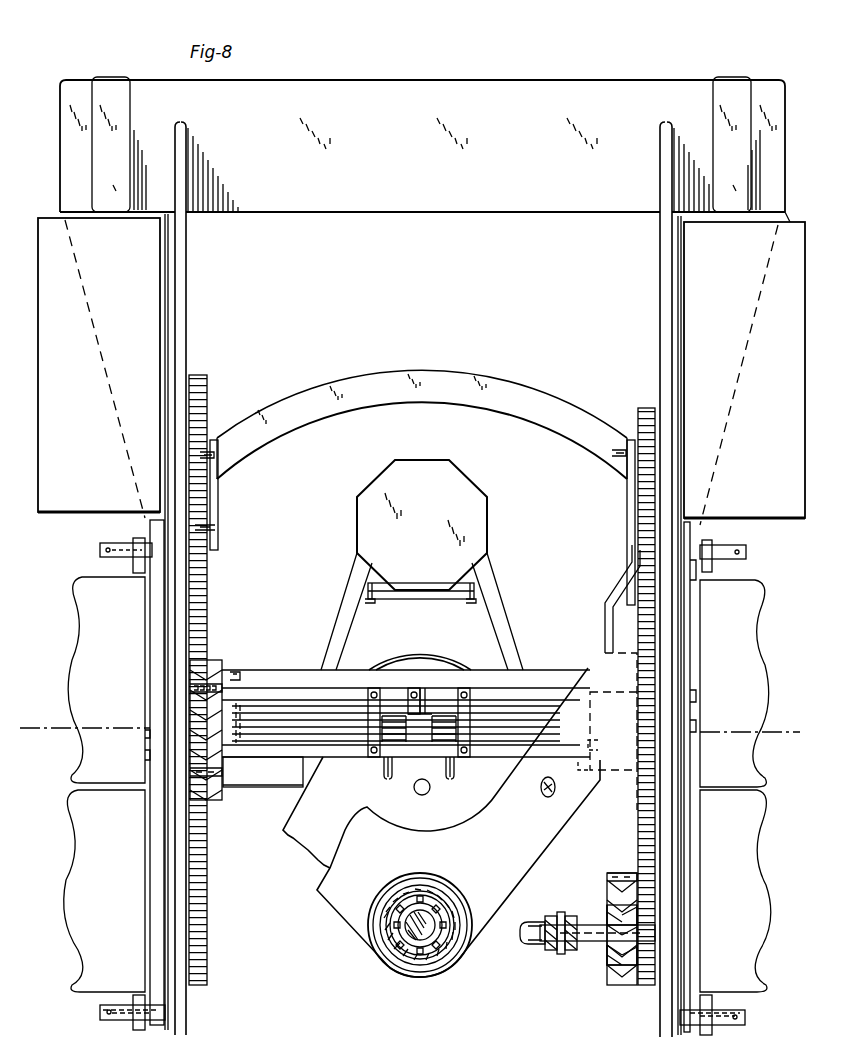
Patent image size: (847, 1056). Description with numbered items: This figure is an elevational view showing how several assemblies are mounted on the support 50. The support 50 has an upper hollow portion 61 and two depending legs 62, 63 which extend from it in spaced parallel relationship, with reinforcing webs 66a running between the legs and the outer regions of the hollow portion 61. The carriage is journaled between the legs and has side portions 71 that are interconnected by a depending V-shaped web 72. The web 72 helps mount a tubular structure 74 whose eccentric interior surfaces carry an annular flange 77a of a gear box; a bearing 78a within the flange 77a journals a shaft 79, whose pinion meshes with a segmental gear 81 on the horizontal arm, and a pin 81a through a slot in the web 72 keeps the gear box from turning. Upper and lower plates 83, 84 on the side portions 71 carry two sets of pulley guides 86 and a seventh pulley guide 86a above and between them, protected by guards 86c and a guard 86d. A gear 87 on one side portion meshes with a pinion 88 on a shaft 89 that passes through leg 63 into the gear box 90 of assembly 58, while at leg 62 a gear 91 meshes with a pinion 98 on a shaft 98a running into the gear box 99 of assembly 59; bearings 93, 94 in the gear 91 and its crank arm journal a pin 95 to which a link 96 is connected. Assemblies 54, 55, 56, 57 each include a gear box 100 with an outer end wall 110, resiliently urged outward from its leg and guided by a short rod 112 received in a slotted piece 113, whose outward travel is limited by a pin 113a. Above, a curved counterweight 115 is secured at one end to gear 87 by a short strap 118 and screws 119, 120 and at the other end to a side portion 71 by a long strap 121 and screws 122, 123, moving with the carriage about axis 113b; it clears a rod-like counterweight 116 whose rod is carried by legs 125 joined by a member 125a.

The support 50 is at (586, 82).
The upper hollow portion 61 is at (503, 94).
The assembly 59 is at (788, 214).
The leg 63 is at (186, 300).
The leg 62 is at (660, 262).
The reinforcing webs 66a is at (105, 372).
The gear box 90 is at (99, 365).
The gear box 99 is at (744, 370).
The assembly 58 is at (68, 516).
The slotted piece 113 is at (138, 538).
The short rod 112 is at (100, 552).
The pin 113a is at (106, 1011).
The axis 113b is at (416, 741).
The gear box 100 is at (417, 784).
The outer end wall 110 is at (101, 827).
The assembly 57 is at (70, 668).
The assembly 56 is at (70, 951).
The assembly 54 is at (762, 637).
The assembly 55 is at (766, 854).
The pinion 88 is at (208, 386).
The shaft 89 is at (190, 425).
The gear 87 is at (206, 603).
The pinion 98 is at (640, 432).
The shaft 98a is at (656, 428).
The counterweight 115 is at (432, 382).
The short strap 118 is at (218, 497).
The screw 119 is at (218, 458).
The screw 120 is at (212, 527).
The long strap 121 is at (627, 510).
The screw 122 is at (612, 455).
The counterweight 116 is at (468, 496).
The legs 125 is at (342, 640).
The member 125a is at (430, 600).
The upper plate 83 is at (248, 686).
The lower plate 84 is at (282, 760).
The side portions 71 is at (214, 672).
The guards 86c is at (368, 738).
The guard 86d is at (408, 690).
The pulley guide 86a is at (428, 705).
The pulley guides 86 is at (386, 775).
The web 72 is at (477, 815).
The segmental gear 81 is at (305, 803).
The pin 81a is at (545, 797).
The screw 123 is at (602, 668).
The gear 91 is at (632, 540).
The annular flange 77a is at (440, 906).
The bearing 78a is at (397, 908).
The tubular structure 74 is at (392, 932).
The shaft 79 is at (415, 940).
The bearing 94 is at (657, 935).
The link 96 is at (530, 944).
The pin 95 is at (590, 925).
The bearing 93 is at (598, 950).